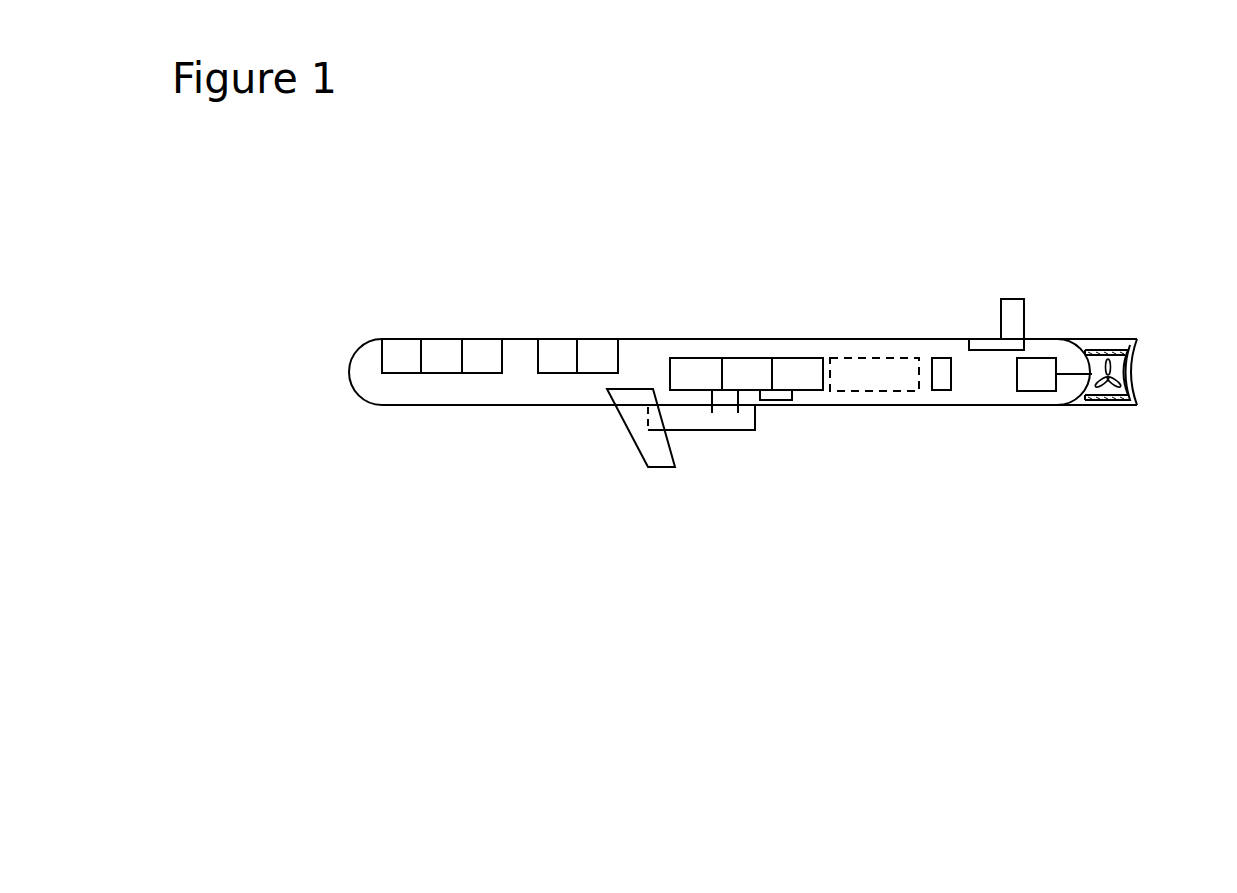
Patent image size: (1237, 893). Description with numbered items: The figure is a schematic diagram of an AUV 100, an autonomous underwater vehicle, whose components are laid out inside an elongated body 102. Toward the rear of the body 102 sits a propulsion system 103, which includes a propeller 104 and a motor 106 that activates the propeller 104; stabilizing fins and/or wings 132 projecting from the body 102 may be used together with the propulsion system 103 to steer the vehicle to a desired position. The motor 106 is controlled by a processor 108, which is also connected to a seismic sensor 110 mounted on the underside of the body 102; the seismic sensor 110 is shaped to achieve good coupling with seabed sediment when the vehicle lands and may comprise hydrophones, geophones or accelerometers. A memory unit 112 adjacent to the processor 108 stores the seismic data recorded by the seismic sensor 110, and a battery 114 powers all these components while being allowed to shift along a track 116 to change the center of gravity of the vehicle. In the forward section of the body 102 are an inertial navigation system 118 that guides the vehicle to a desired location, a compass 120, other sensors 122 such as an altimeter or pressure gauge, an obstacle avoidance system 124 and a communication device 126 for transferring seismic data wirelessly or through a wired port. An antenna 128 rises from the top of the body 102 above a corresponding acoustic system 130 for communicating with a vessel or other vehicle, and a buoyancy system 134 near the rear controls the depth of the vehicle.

The AUV 100 is at (793, 203).
The body 102 is at (520, 375).
The propulsion system 103 is at (1187, 462).
The propeller 104 is at (1112, 363).
The motor 106 is at (1033, 382).
The processor 108 is at (749, 373).
The seismic sensor 110 is at (700, 432).
The memory unit 112 is at (695, 368).
The battery 114 is at (799, 368).
The track 116 is at (882, 370).
The inertial navigation system 118 is at (603, 367).
The compass 120 is at (552, 365).
The other sensors 122 is at (483, 367).
The obstacle avoidance system 124 is at (442, 352).
The communication device 126 is at (400, 349).
The antenna 128 is at (1018, 313).
The acoustic system 130 is at (988, 348).
The stabilizing fins and/or wings 132 is at (643, 463).
The buoyancy system 134 is at (942, 380).